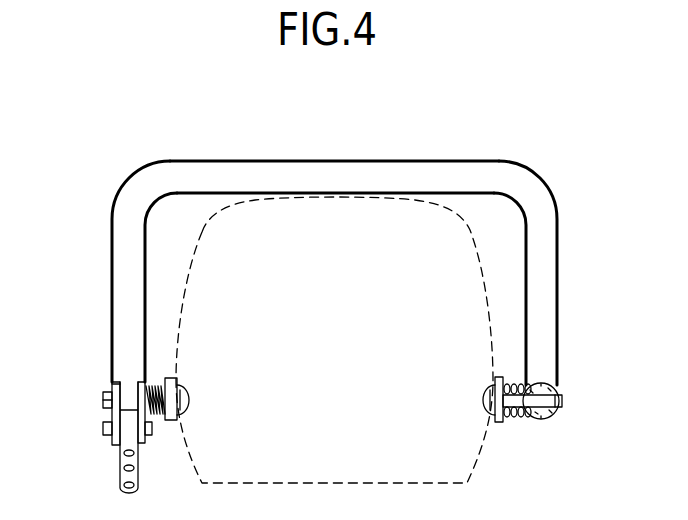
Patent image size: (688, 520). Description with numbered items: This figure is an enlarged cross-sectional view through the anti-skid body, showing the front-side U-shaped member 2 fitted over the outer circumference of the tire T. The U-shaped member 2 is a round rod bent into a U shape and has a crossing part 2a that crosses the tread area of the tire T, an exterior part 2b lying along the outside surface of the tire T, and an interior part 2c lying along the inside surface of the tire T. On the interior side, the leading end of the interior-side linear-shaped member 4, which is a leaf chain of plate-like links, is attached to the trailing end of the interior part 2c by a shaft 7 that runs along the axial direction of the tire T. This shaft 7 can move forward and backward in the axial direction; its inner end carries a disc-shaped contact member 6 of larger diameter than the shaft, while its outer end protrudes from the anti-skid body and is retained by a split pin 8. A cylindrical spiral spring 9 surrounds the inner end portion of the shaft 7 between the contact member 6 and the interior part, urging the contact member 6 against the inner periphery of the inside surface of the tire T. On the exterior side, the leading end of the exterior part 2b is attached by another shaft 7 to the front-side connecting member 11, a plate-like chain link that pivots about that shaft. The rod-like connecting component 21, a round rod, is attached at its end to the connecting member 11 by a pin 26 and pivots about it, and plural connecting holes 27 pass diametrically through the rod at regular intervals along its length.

The front-side U-shaped member 2 is at (337, 139).
The crossing part 2a is at (439, 161).
The exterior part 2b is at (112, 240).
The interior part 2c is at (557, 242).
The tire T is at (201, 231).
The interior-side linear-shaped member 4 is at (541, 419).
The contact member 6 is at (170, 421).
The shaft 7 is at (109, 392).
The split pin 8 is at (110, 385).
The spiral spring 9 is at (150, 415).
The front-side connecting member 11 is at (113, 417).
The rod-like connecting component 21 is at (118, 453).
The pin 26 is at (108, 428).
The connecting holes 27 is at (118, 485).